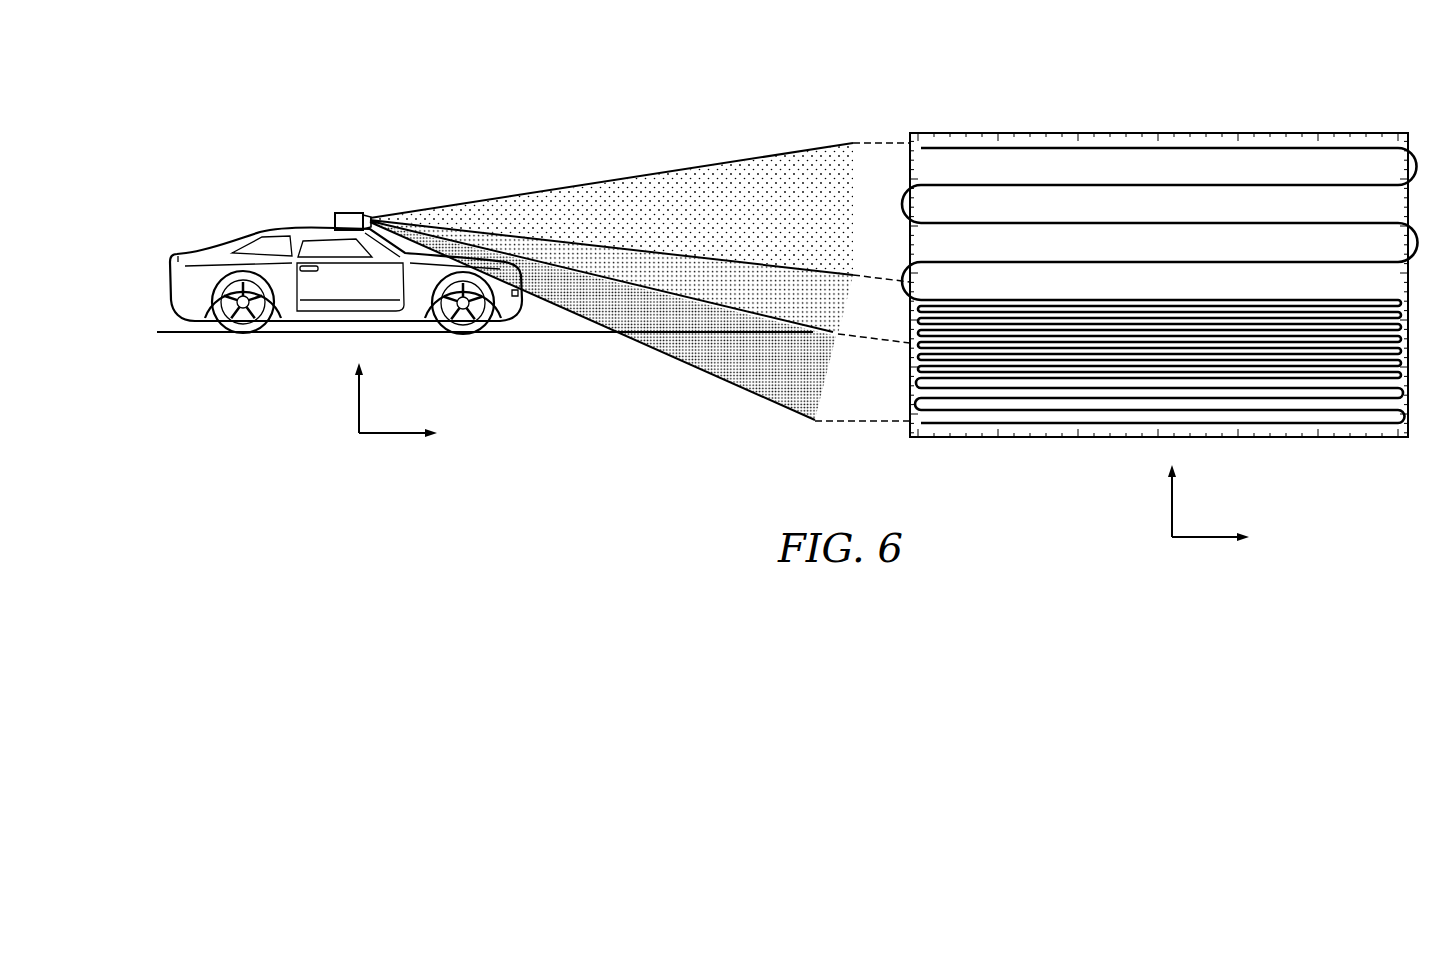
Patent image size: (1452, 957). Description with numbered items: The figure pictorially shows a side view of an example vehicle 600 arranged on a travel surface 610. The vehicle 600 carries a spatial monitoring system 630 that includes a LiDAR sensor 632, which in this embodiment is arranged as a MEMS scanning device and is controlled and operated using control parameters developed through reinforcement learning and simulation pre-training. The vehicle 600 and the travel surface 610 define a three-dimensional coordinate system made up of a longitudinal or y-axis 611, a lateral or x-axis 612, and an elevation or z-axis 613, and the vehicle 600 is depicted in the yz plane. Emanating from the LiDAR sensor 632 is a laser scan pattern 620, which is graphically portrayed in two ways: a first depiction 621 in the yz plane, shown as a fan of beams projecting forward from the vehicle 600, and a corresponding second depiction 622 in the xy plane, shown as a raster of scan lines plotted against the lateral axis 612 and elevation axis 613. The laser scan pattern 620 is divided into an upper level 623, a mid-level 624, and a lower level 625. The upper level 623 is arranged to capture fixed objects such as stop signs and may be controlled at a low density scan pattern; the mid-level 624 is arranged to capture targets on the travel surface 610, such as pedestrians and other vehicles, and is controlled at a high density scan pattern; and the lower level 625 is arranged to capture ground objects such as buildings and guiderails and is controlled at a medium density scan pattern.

The vehicle 600 is at (288, 210).
The travel surface 610 is at (528, 332).
The longitudinal or y-axis 611 is at (412, 467).
The lateral or x-axis 612 is at (1226, 571).
The elevation or z-axis 613 is at (352, 402).
The laser scan pattern 620 is at (681, 284).
The first depiction 621 is at (618, 174).
The second depiction 622 is at (1187, 124).
The upper level 623 is at (948, 168).
The mid-level 624 is at (948, 322).
The lower level 625 is at (820, 375).
The spatial monitoring system 630 is at (334, 205).
The LiDAR sensor 632 is at (351, 212).